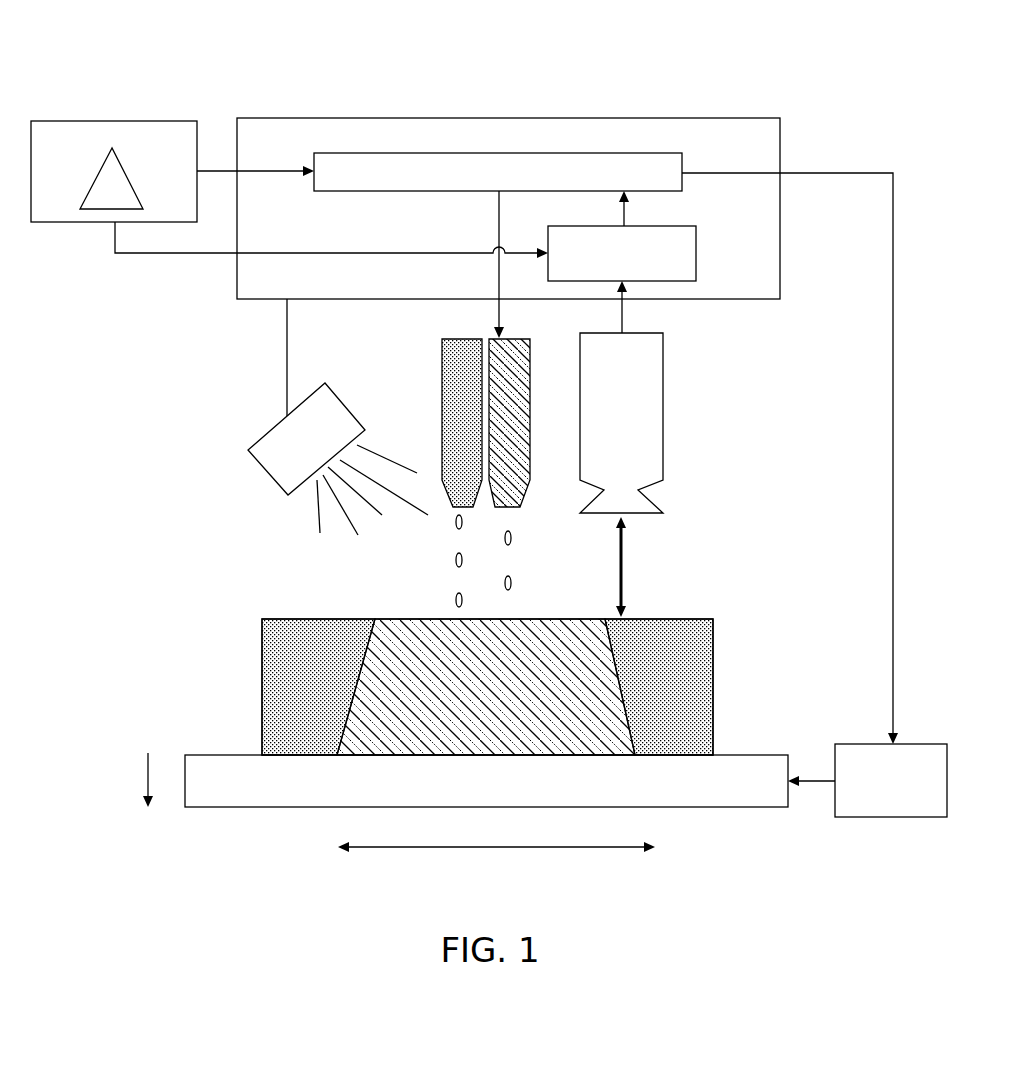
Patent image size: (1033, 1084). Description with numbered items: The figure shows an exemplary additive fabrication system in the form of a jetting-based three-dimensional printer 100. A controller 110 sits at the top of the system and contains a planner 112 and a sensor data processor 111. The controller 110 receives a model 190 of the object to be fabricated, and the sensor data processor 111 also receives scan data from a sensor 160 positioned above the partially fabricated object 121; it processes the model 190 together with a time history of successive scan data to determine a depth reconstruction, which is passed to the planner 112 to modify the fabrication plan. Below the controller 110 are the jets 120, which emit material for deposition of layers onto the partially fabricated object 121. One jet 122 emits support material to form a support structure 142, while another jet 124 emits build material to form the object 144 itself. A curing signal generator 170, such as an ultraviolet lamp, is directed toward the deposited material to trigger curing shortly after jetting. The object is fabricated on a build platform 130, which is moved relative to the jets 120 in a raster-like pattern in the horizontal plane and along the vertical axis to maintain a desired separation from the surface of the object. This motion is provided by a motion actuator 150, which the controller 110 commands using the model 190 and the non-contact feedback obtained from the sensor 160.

The jetting-based 3D printer 100 is at (232, 49).
The model 190 is at (157, 118).
The controller 110 is at (528, 115).
The planner 112 is at (686, 166).
The sensor data processor 111 is at (700, 256).
The jets 120 is at (402, 384).
The support material jet 122 is at (440, 352).
The build material jet 124 is at (530, 373).
The curing signal generator 170 is at (252, 465).
The sensor 160 is at (668, 418).
The partially fabricated object 121 is at (477, 655).
The support structure 142 is at (715, 633).
The object 144 is at (418, 617).
The build platform 130 is at (272, 806).
The motion actuator 150 is at (833, 805).